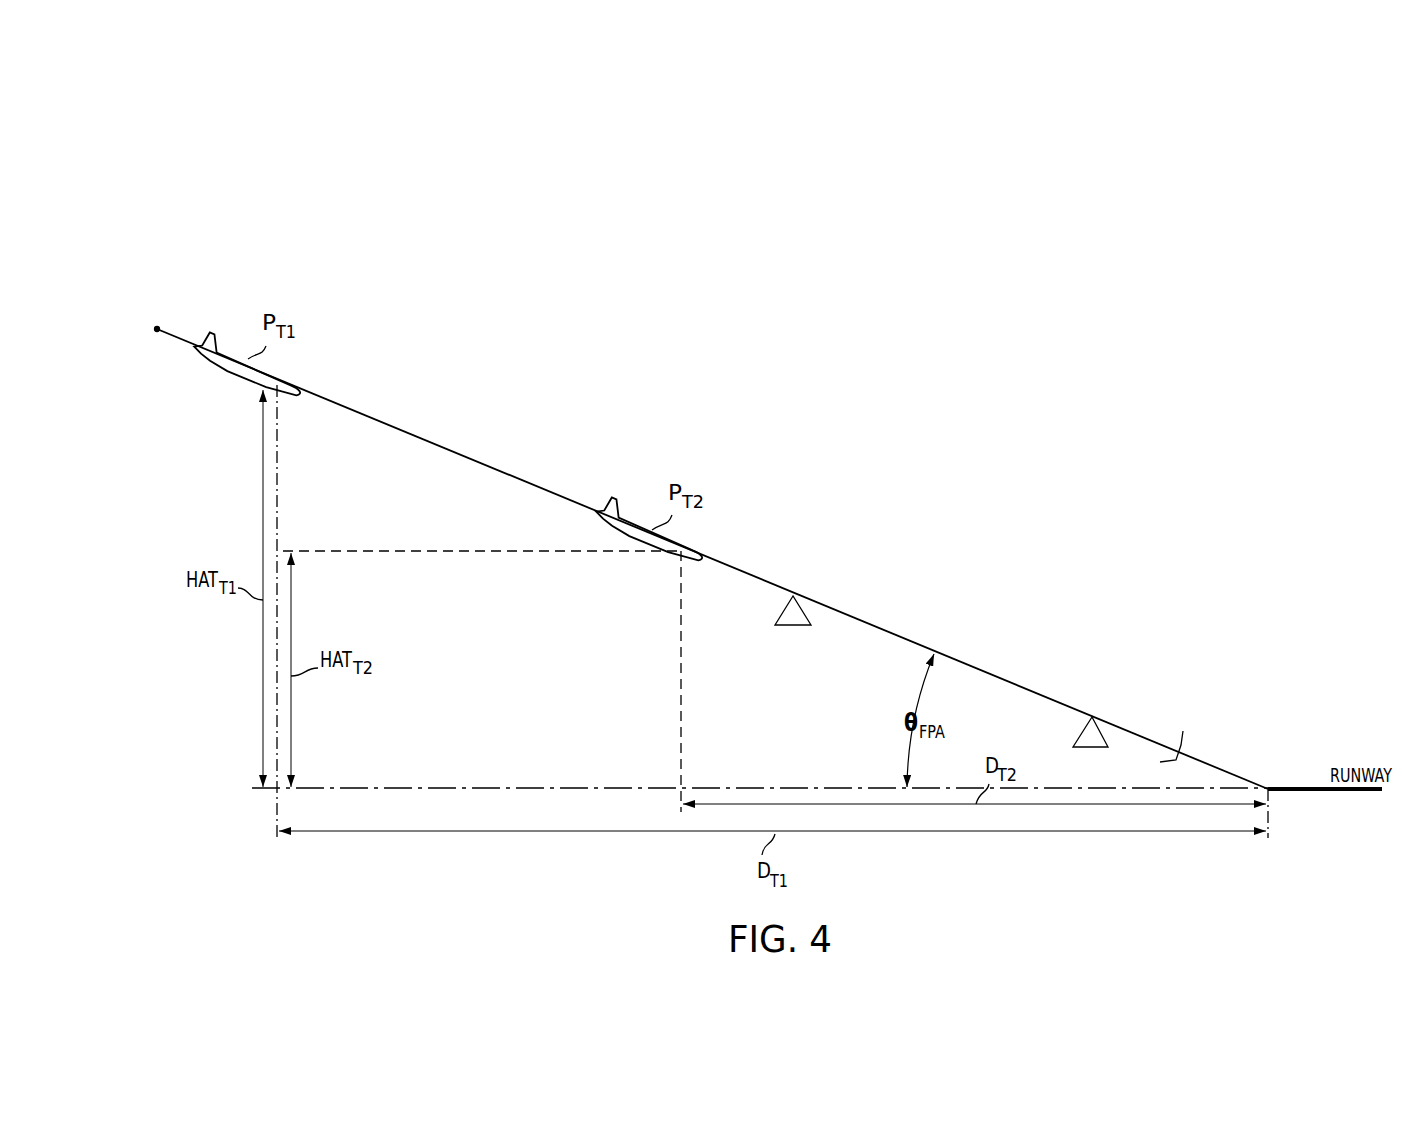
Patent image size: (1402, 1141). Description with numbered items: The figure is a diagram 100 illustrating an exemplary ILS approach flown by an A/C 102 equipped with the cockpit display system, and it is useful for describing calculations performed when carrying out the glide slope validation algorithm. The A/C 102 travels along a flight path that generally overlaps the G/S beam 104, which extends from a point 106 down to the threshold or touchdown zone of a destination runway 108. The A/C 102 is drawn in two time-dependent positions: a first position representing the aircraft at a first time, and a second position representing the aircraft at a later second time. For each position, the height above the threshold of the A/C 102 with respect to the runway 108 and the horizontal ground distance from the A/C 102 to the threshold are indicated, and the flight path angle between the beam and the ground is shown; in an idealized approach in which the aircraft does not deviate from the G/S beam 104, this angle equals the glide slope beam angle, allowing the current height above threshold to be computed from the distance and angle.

The diagram 100 is at (181, 227).
The A/C 102 is at (216, 365).
The G/S beam 104 is at (891, 604).
The point 106 is at (157, 328).
The destination runway 108 is at (1283, 787).